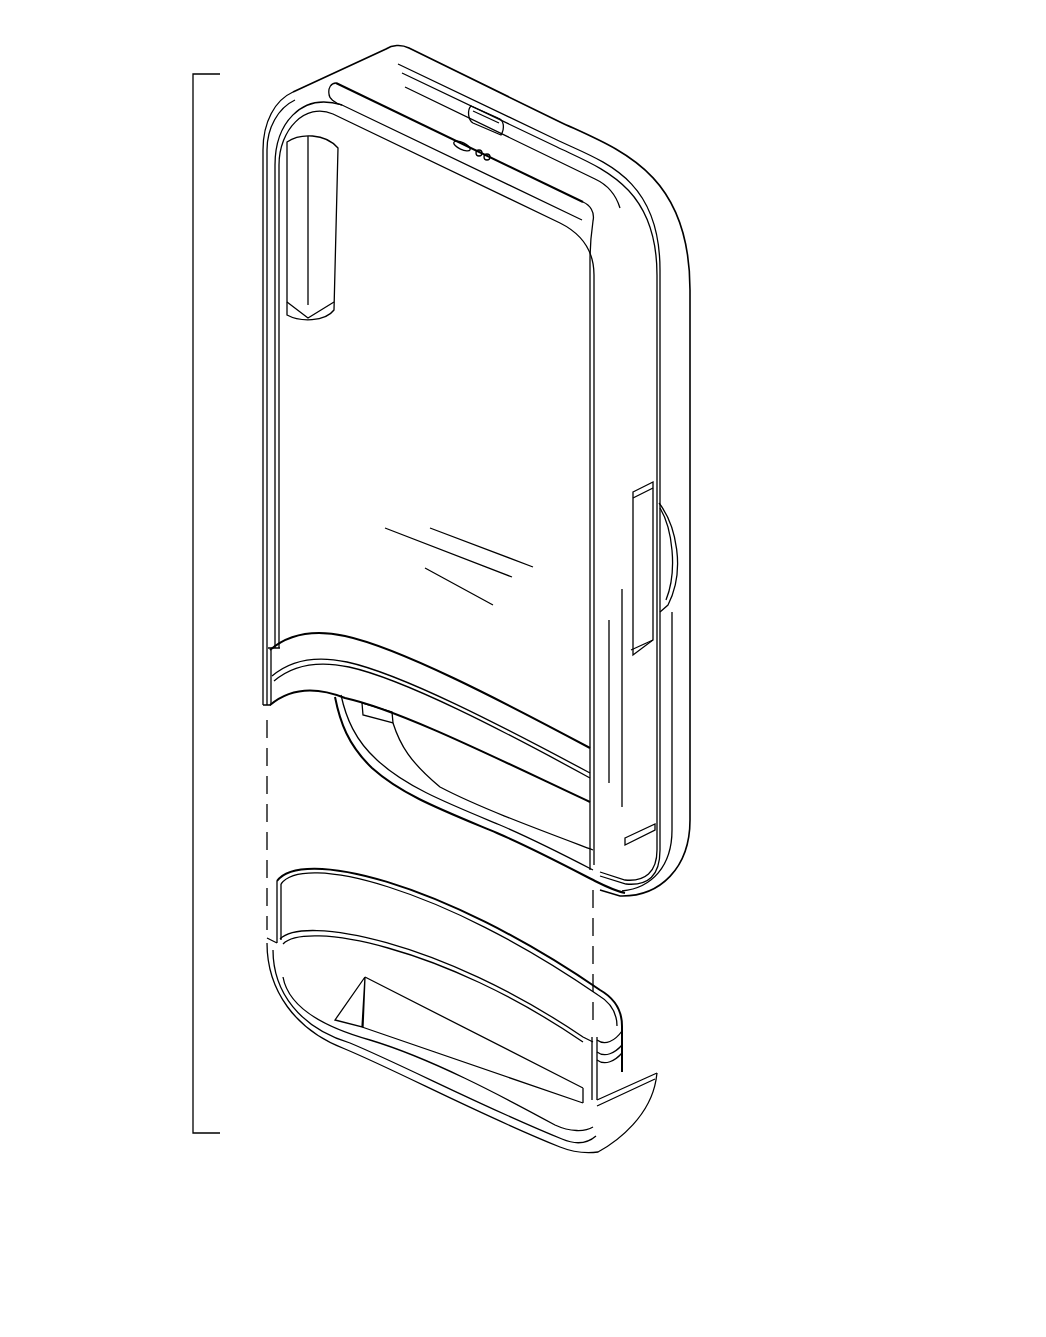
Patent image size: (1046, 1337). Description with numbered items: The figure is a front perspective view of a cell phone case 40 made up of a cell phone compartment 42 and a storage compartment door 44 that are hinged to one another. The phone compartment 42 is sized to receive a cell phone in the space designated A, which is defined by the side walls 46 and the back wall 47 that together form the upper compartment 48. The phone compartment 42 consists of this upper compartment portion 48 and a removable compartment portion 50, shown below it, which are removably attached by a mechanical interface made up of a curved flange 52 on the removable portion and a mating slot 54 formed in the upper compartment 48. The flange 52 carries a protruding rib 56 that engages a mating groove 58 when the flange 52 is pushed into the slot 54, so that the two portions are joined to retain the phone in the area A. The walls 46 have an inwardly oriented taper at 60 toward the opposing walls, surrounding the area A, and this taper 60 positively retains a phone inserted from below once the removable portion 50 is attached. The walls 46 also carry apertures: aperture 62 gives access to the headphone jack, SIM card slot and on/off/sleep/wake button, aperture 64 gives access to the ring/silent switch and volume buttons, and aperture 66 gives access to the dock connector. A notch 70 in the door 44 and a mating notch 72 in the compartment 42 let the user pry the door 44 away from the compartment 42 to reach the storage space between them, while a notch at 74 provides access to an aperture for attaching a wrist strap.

The cell phone case 40 is at (179, 814).
The cell phone compartment 42 is at (193, 552).
The storage compartment door 44 is at (690, 432).
The side walls 46 is at (611, 410).
The back wall 47 is at (398, 452).
The upper compartment 48 is at (314, 82).
The removable compartment portion 50 is at (600, 1148).
The curved flange 52 is at (628, 1025).
The slot 54 is at (338, 650).
The protruding rib 56 is at (628, 1048).
The groove 58 is at (460, 706).
The taper 60 is at (494, 191).
The aperture 62 is at (596, 206).
The aperture 64 is at (340, 236).
The aperture 66 is at (410, 1040).
The notch 70 is at (690, 548).
The mating notch 72 is at (630, 525).
The notch 74 is at (521, 107).
The space A is at (470, 360).